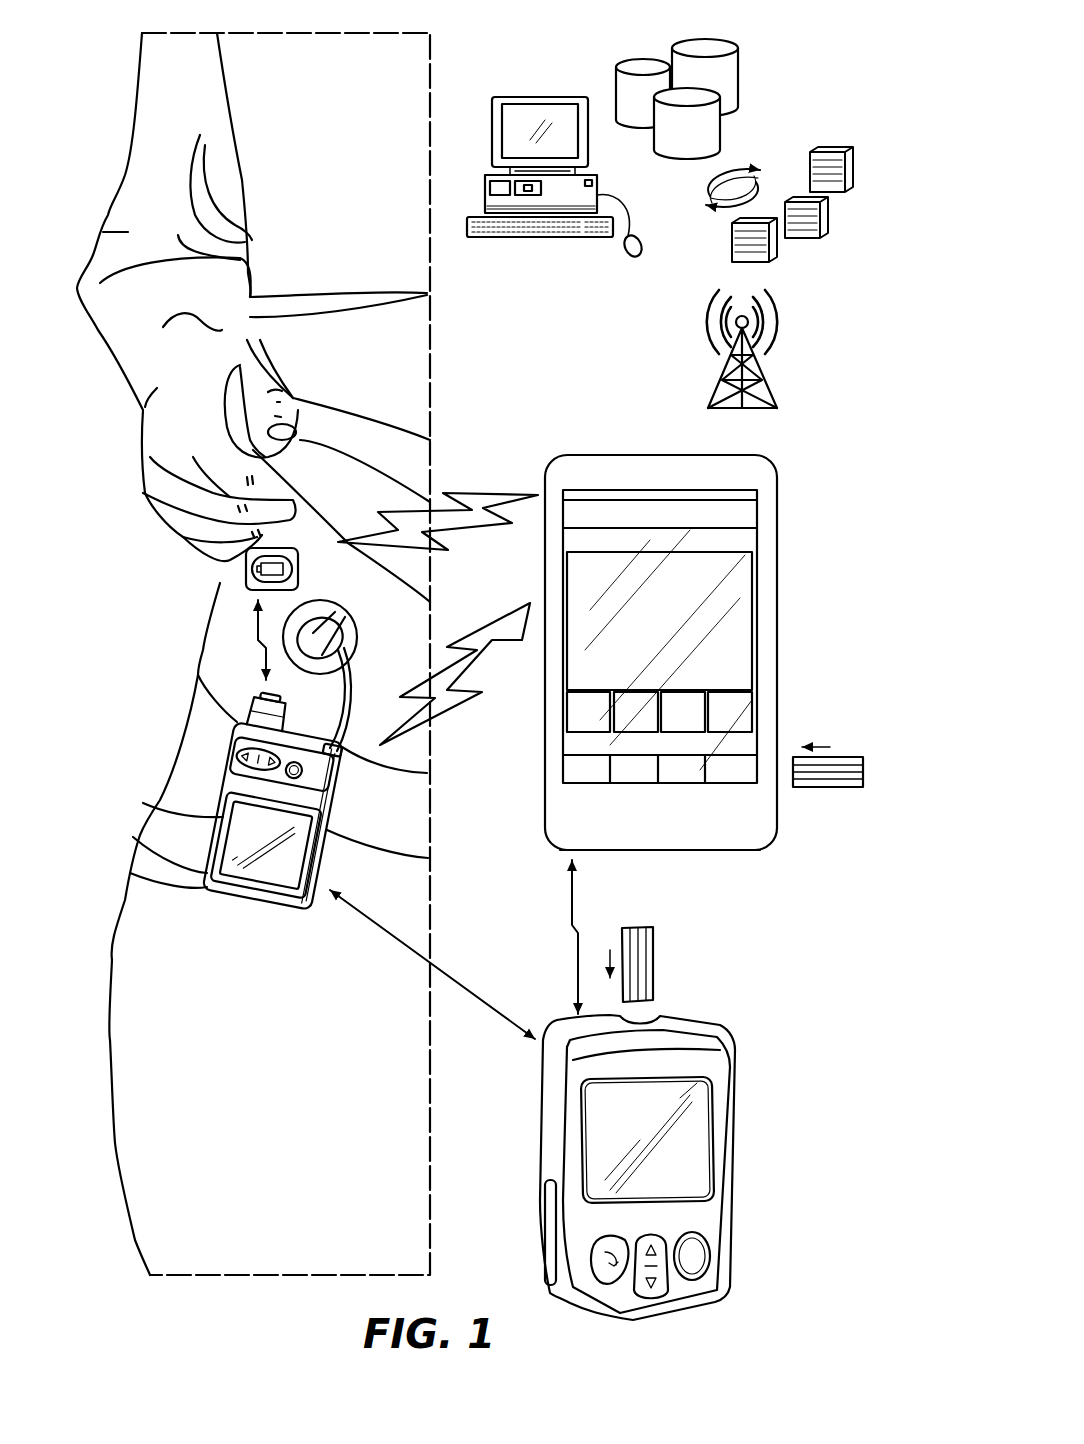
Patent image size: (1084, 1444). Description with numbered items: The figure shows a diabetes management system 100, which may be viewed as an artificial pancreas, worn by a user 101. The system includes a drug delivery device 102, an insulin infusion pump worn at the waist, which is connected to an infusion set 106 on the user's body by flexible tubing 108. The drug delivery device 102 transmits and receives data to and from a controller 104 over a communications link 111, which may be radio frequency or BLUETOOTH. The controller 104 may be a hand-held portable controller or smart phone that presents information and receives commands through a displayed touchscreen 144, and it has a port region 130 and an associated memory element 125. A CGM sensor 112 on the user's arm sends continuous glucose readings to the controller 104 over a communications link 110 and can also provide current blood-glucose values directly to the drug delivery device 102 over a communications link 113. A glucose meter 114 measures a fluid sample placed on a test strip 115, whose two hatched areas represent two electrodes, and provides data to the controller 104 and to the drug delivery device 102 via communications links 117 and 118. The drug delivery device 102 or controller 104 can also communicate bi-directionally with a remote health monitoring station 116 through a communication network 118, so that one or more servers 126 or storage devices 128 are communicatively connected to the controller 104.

The diabetes management system 100 is at (850, 452).
The user 101 is at (118, 158).
The drug delivery device 102 is at (222, 815).
The controller 104 is at (777, 603).
The infusion set 106 is at (313, 633).
The flexible tubing 108 is at (348, 678).
The communications link 110 is at (480, 492).
The communications link 111 is at (467, 703).
The CGM sensor 112 is at (245, 578).
The communications link 113 is at (255, 638).
The glucose meter 114 is at (737, 1135).
The test strip 115 is at (655, 963).
The remote health monitoring station 116 is at (800, 98).
The communications link 117 is at (568, 920).
The communication network 118 is at (790, 352).
The memory card 125 is at (832, 787).
The server 126 is at (535, 92).
The storage device 128 is at (658, 47).
The port of controller 130 is at (745, 852).
The touchscreen 144 is at (742, 540).